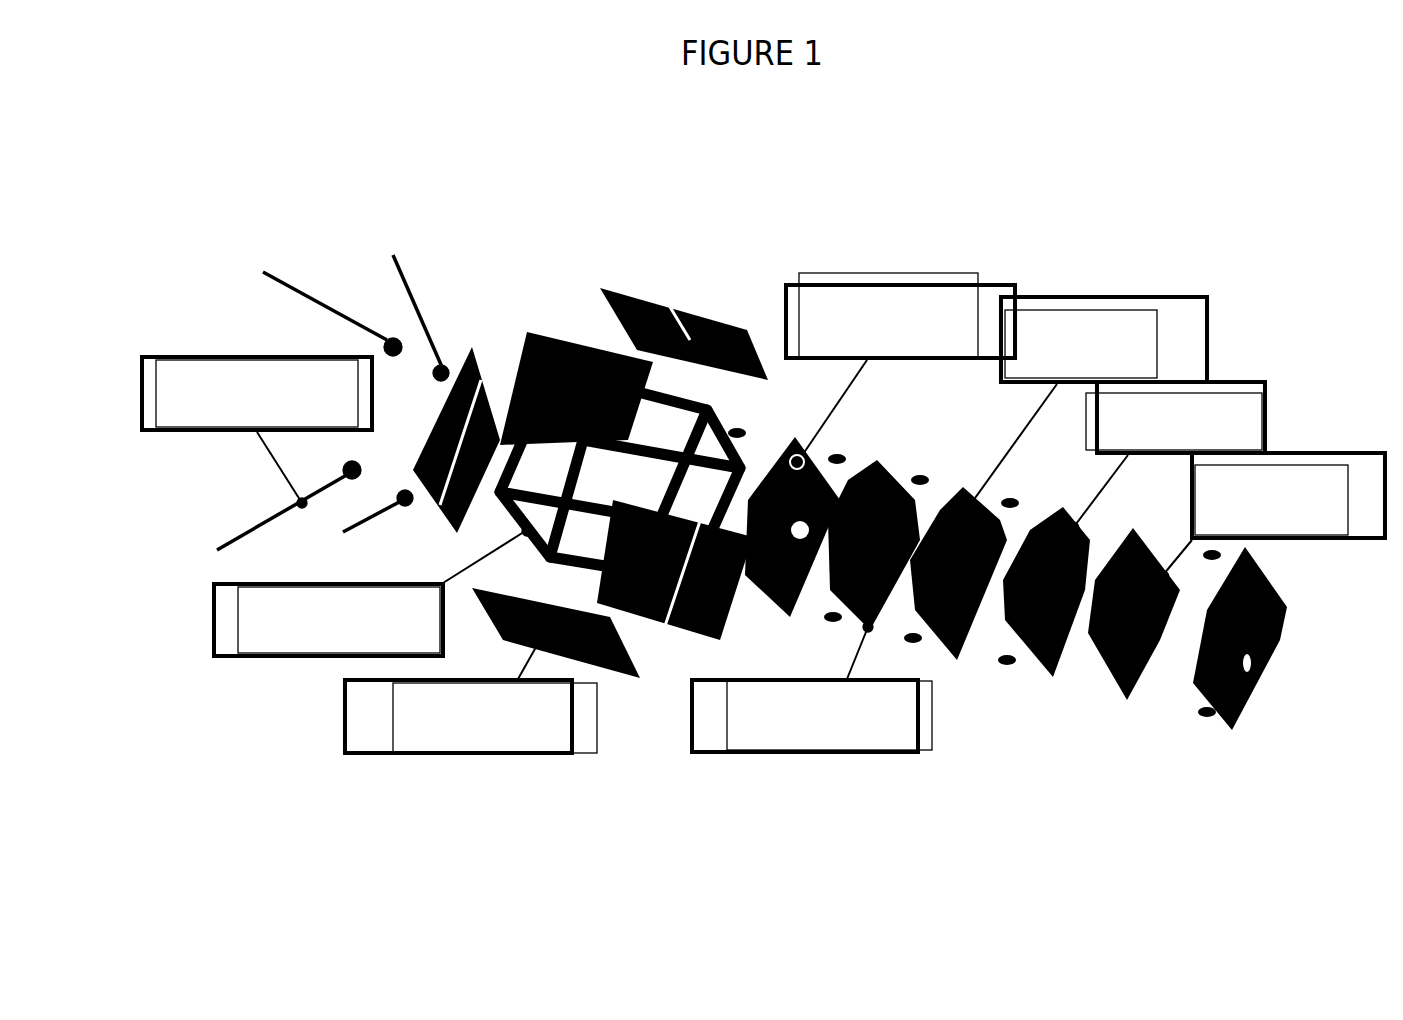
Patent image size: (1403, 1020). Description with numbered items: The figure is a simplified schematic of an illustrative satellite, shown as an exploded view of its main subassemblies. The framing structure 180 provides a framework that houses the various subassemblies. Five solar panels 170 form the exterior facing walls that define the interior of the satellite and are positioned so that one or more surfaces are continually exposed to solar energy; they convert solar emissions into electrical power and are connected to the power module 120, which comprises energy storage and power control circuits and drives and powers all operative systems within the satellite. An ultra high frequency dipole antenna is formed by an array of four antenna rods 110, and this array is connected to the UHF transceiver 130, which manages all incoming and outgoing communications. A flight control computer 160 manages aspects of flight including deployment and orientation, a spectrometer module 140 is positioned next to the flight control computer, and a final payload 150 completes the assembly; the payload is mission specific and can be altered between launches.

The antenna rods 110 is at (178, 350).
The power module 120 is at (978, 250).
The UHF transceiver 130 is at (1122, 297).
The spectrometer module 140 is at (1228, 368).
The payload 150 is at (1300, 442).
The flight control computer 160 is at (737, 765).
The solar panels 170 is at (392, 763).
The framing structure 180 is at (249, 668).